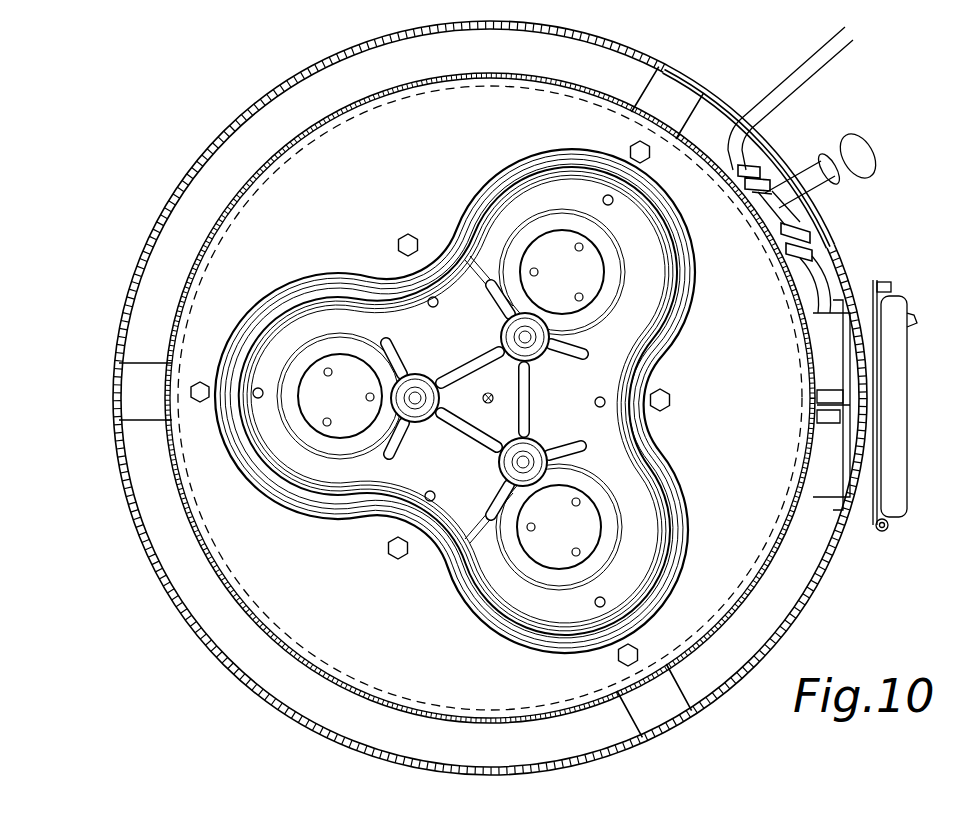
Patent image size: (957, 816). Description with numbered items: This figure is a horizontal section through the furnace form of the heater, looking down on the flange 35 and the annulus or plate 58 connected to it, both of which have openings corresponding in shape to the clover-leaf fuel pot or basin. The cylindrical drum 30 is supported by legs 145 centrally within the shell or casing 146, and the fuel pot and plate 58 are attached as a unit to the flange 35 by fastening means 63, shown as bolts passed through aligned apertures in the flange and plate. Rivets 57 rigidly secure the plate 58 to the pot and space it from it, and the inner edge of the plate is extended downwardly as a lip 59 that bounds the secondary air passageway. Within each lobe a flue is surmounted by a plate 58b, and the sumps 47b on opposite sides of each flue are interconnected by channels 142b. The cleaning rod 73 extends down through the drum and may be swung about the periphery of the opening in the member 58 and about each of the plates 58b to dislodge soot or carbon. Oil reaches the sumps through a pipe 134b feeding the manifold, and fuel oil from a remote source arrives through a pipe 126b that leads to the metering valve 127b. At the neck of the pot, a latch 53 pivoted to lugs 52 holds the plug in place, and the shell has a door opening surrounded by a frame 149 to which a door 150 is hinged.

The pipe 126b is at (806, 80).
The metering valve 127b is at (818, 190).
The pipe 134b is at (818, 280).
The cylindrical drum 30 is at (489, 78).
The flange 35 is at (490, 398).
The shell or casing 146 is at (195, 238).
The legs 145 is at (118, 383).
The fastening means 63 is at (408, 234).
The rivets 57 is at (428, 306).
The plate 58b is at (451, 399).
The annulus 58 is at (640, 318).
The lip 59 is at (585, 437).
The sumps 47b is at (432, 370).
The cleaning rod 73 is at (496, 388).
The channels 142b is at (513, 407).
The latch 53 is at (845, 390).
The lugs 52 is at (833, 425).
The door 150 is at (895, 385).
The frame 149 is at (865, 472).